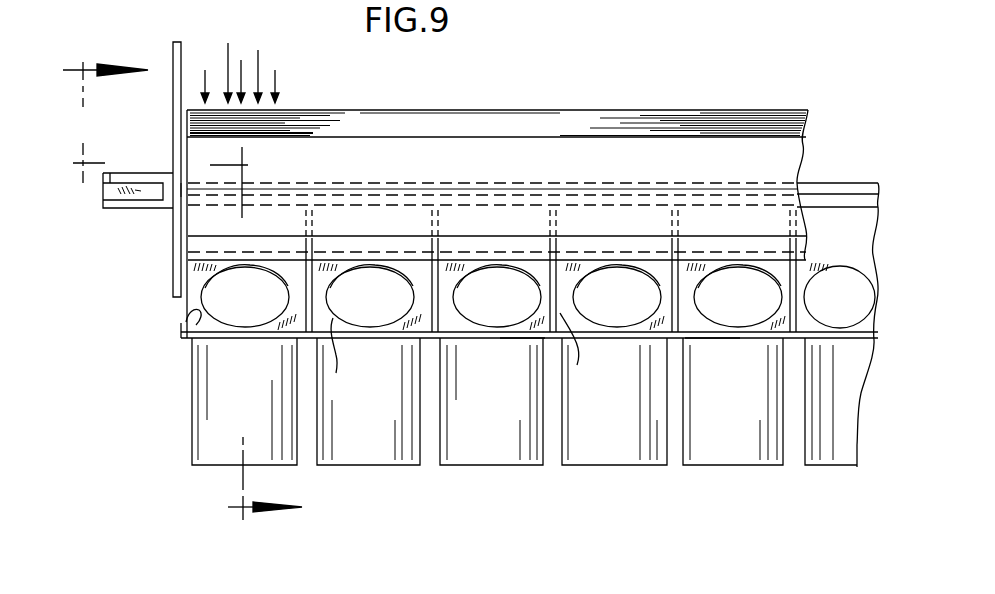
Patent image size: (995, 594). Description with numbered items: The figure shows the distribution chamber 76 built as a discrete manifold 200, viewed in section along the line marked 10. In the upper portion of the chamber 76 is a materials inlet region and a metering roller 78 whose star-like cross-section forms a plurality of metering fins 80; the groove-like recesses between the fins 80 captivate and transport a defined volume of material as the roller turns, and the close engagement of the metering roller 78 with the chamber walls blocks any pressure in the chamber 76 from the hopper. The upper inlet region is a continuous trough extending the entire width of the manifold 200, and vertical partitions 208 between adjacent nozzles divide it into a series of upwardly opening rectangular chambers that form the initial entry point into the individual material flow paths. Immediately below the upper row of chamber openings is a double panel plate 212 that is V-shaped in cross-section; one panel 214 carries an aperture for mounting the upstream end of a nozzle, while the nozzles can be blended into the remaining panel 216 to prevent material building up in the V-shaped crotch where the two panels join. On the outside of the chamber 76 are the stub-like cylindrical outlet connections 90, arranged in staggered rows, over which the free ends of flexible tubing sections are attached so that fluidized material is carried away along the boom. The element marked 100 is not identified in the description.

The section line 10- 10 is at (175, 291).
The chamber 76 is at (181, 322).
The metering roller 78 is at (316, 110).
The metering fins 80 is at (504, 82).
The outlet connections 90 is at (578, 450).
The retaining hook 100 is at (186, 313).
The manifold 200 is at (863, 150).
The vertical partitions 208 is at (475, 351).
The double panel plate 212 is at (527, 333).
The panel 214 is at (208, 324).
The remaining panel 216 is at (290, 228).